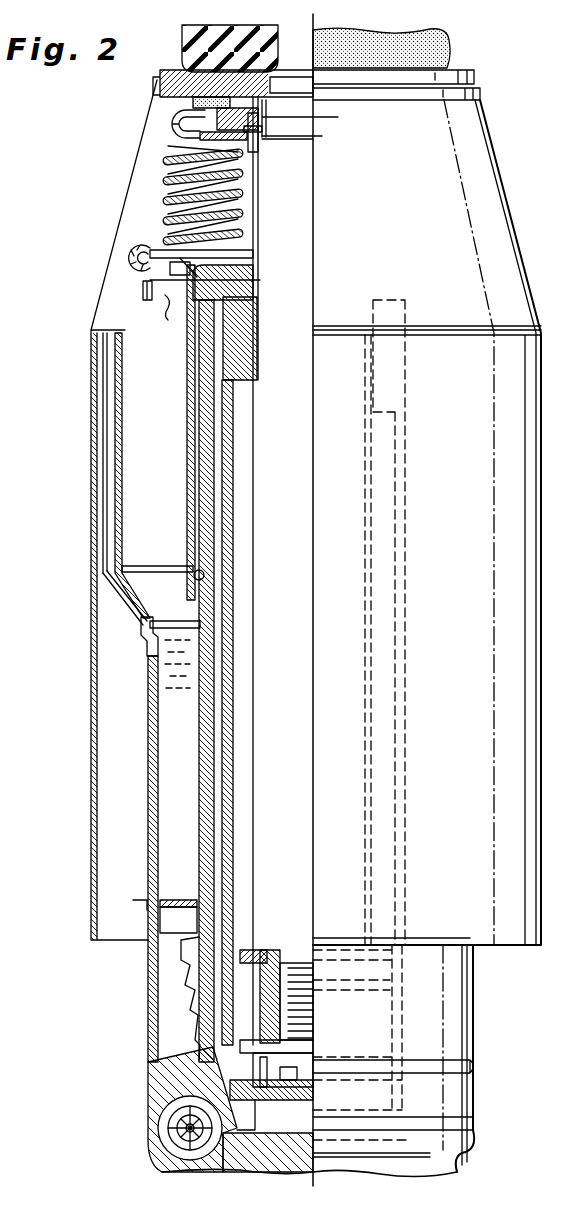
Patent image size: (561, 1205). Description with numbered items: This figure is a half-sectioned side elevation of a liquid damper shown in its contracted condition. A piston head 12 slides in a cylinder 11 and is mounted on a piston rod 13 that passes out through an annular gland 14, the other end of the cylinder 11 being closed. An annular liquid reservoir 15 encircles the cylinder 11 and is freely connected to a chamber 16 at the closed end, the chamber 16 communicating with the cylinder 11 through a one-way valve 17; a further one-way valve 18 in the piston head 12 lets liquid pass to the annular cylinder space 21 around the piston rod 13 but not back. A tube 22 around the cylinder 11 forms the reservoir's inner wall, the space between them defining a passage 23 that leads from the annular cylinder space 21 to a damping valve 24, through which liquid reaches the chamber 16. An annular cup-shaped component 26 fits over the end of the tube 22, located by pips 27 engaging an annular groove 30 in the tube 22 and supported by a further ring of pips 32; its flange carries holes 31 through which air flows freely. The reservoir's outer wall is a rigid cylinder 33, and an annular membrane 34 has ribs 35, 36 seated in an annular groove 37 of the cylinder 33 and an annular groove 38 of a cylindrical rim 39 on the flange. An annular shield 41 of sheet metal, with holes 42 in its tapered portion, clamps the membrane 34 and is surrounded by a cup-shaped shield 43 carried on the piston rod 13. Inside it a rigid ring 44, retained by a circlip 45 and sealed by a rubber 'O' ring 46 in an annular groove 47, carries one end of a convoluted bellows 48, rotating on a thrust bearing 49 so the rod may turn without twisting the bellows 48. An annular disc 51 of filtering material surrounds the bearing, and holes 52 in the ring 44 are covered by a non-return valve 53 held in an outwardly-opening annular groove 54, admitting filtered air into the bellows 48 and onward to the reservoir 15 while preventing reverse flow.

The cylinder 11 is at (228, 804).
The piston head 12 is at (240, 1005).
The piston rod 13 is at (318, 263).
The annular gland 14 is at (250, 349).
The annular liquid reservoir 15 is at (178, 826).
The chamber 16 is at (237, 1128).
The one-way valve 17 is at (313, 1070).
The further one-way valve 18 is at (248, 945).
The annular cylinder space 21 is at (243, 858).
The tube 22 is at (200, 890).
The passage 23 is at (217, 700).
The damping valve 24 is at (186, 1127).
The annular cup-shaped component 26 is at (190, 435).
The pips 27 is at (195, 568).
The annular groove 30 is at (203, 577).
The holes 31 is at (150, 245).
The further ring of pips 32 is at (198, 337).
The rigid cylinder 33 is at (150, 796).
The annular membrane 34 is at (115, 550).
The rib 35 is at (143, 640).
The rib 36 is at (150, 289).
The annular groove 37 is at (195, 630).
The annular groove 38 is at (160, 288).
The cylindrical rim 39 is at (166, 316).
The annular shield 41 is at (105, 471).
The holes 42 is at (143, 625).
The cup-shaped shield 43 is at (92, 526).
The rigid ring 44 is at (240, 107).
The circlip 45 is at (263, 140).
The rubber 'O' ring 46 is at (318, 119).
The annular groove 47 is at (309, 142).
The convoluted bellows 48 is at (163, 165).
The thrust bearing 49 is at (262, 105).
The annular disc of filtering material 51 is at (188, 98).
The holes 52 is at (193, 111).
The non-return valve 53 is at (197, 148).
The outwardly-opening annular groove 54 is at (262, 146).